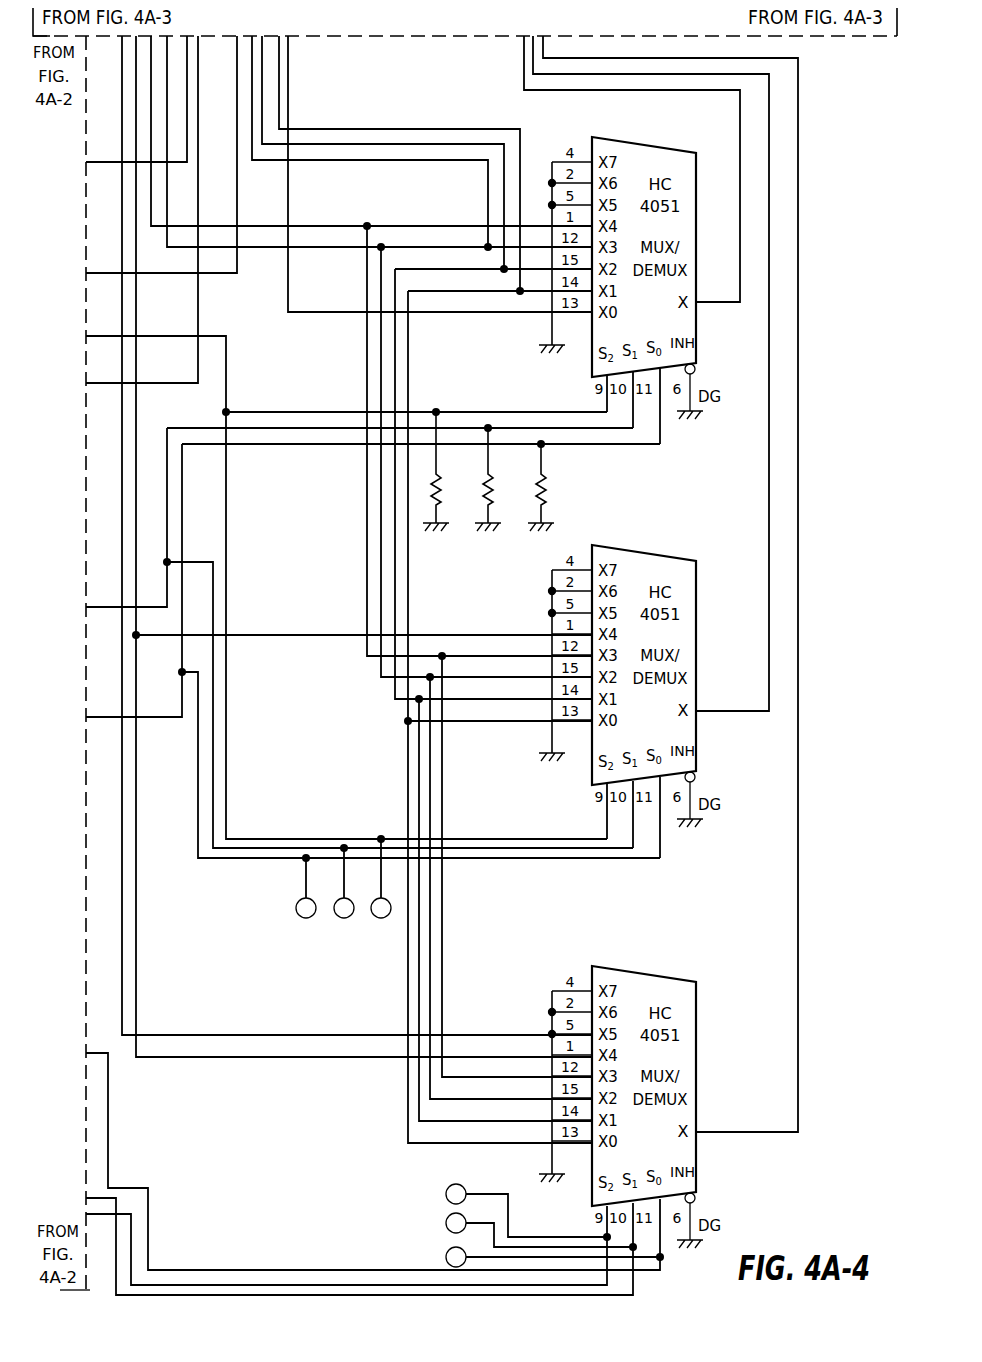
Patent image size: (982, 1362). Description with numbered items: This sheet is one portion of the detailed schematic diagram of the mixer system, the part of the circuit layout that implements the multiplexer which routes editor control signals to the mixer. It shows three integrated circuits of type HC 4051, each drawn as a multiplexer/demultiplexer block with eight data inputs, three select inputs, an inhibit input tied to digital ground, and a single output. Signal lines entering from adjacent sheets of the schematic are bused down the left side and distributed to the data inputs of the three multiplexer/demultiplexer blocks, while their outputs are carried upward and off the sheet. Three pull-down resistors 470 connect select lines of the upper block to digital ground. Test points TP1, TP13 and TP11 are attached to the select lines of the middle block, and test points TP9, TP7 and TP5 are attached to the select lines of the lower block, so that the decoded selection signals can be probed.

The HC4051 8-channel analog multiplexer/demultiplexer 4051 is at (630, 692).
The 470 ohm pull-down resistor 470 is at (499, 484).
The test point TP1 is at (303, 897).
The test point TP13 is at (342, 892).
The test point TP11 is at (382, 888).
The test point TP9 is at (506, 1210).
The test point TP7 is at (519, 1230).
The test point TP5 is at (532, 1257).